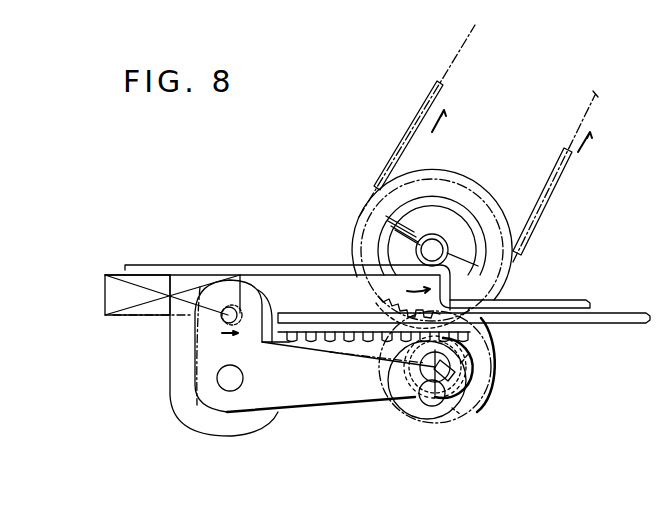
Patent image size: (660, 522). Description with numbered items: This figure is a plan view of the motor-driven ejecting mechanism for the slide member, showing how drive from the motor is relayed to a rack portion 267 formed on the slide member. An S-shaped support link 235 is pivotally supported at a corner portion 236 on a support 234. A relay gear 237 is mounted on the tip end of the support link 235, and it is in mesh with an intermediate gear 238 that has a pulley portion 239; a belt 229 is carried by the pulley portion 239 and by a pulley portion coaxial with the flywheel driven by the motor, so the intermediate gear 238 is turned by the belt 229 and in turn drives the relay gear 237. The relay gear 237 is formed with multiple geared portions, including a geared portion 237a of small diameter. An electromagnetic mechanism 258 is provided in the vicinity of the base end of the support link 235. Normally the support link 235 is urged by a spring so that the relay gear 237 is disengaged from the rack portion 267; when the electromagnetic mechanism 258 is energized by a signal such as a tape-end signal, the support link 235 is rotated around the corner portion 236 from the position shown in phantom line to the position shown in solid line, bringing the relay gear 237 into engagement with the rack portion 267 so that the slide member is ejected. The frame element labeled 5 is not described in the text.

The frame plate 5 is at (294, 270).
The belt 229 is at (402, 142).
The support 234 is at (190, 403).
The support link 235 is at (332, 402).
The corner portion 236 is at (226, 392).
The relay gear 237 is at (473, 397).
The geared portion of a small diameter 237a is at (447, 343).
The intermediate gear 238 is at (457, 218).
The pulley portion 239 is at (505, 236).
The electromagnetic mechanism 258 is at (132, 317).
The rack portion 267 is at (338, 312).